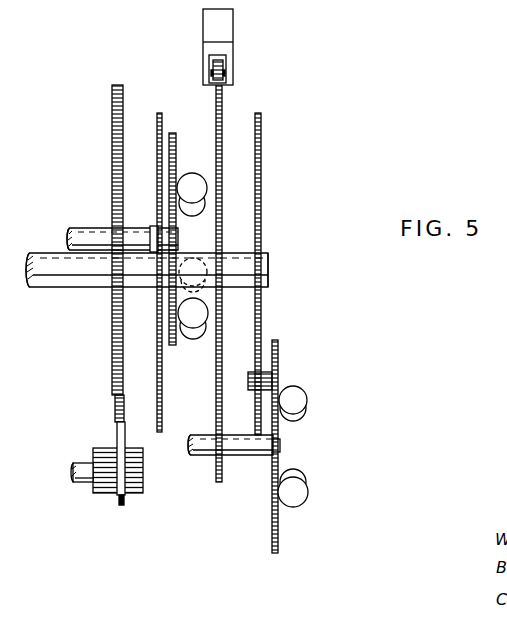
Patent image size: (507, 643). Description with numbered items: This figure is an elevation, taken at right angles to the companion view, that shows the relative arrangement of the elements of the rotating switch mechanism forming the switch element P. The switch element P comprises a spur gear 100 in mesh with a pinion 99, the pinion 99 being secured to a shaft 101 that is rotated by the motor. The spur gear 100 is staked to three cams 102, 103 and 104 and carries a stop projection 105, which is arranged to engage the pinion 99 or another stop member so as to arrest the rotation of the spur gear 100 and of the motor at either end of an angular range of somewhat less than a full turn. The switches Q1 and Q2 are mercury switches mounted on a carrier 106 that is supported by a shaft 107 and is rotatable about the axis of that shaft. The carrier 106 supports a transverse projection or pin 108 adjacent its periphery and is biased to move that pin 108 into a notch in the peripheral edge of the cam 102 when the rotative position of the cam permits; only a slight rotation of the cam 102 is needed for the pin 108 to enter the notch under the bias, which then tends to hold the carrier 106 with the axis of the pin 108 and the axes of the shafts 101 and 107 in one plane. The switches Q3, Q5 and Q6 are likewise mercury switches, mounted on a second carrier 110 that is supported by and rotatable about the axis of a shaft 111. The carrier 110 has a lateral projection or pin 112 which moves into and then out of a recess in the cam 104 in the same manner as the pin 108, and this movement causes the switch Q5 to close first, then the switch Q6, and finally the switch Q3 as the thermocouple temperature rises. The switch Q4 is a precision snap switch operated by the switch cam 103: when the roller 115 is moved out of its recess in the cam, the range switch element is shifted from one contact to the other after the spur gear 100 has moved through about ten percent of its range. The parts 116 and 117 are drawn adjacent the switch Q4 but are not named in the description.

The pinion 99 is at (107, 450).
The spur gear 100 is at (118, 83).
The shaft 101 is at (52, 262).
The cam 102 is at (258, 112).
The switch cam 103 is at (222, 99).
The cam 104 is at (160, 112).
The stop projection 105 is at (122, 496).
The carrier 106 is at (274, 340).
The shaft 107 is at (247, 446).
The transverse projection or pin 108 is at (252, 380).
The carrier 110 is at (173, 132).
The shaft 111 is at (97, 234).
The lateral projection or pin 112 is at (153, 245).
The roller 115 is at (212, 68).
The bracket 116 is at (221, 54).
The housing block 117 is at (225, 27).
The mercury switch Q1 is at (296, 402).
The mercury switch Q2 is at (296, 492).
The mercury switch Q3 is at (193, 181).
The precision snap switch Q4 is at (208, 22).
The mercury switch Q5 is at (202, 290).
The mercury switch Q6 is at (197, 320).
The switch element P is at (276, 198).